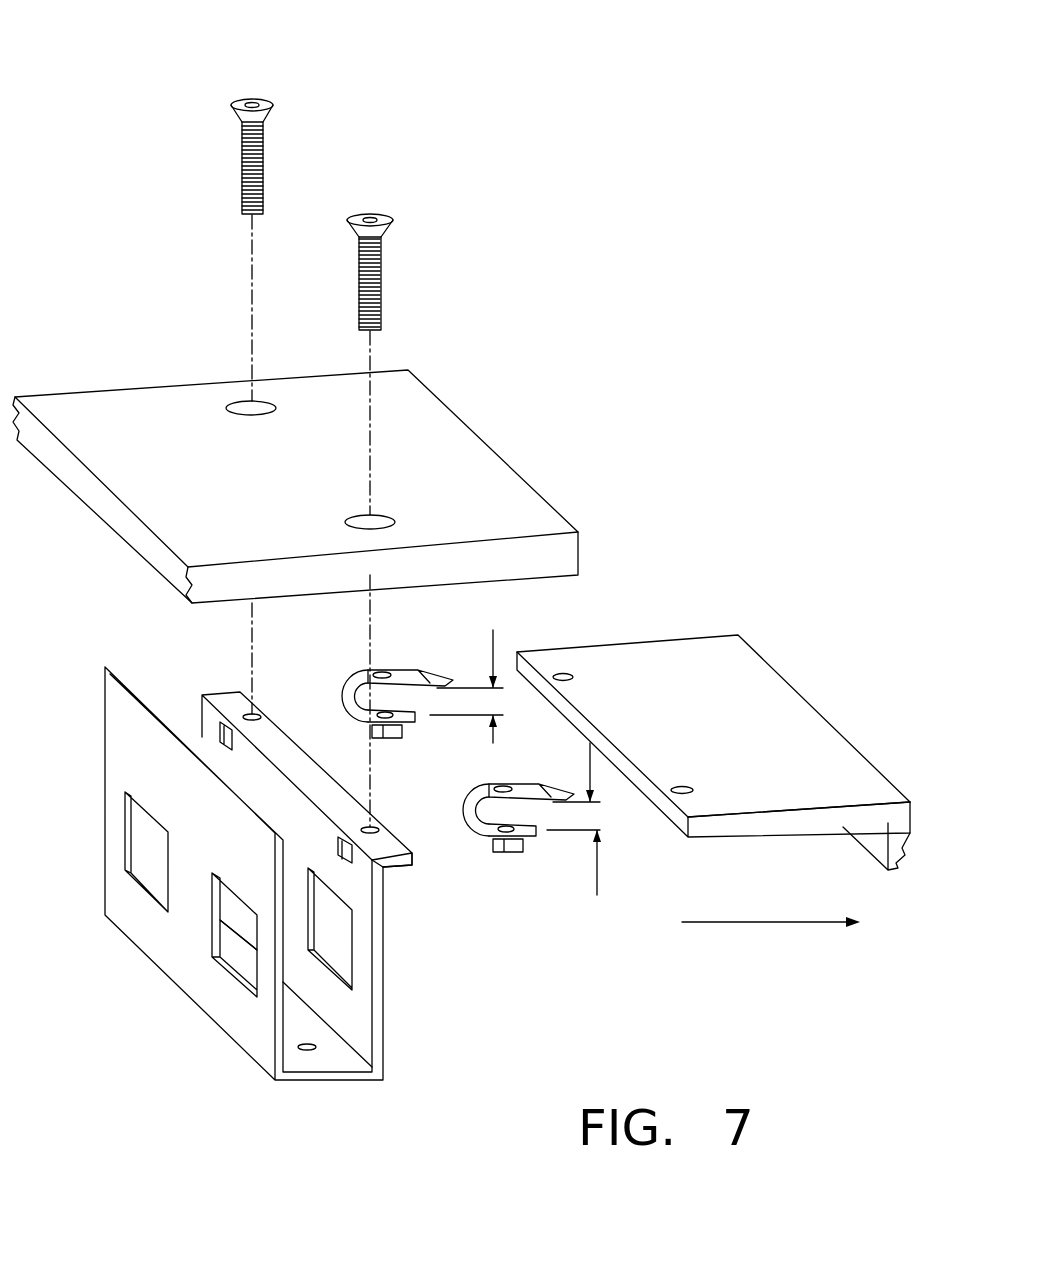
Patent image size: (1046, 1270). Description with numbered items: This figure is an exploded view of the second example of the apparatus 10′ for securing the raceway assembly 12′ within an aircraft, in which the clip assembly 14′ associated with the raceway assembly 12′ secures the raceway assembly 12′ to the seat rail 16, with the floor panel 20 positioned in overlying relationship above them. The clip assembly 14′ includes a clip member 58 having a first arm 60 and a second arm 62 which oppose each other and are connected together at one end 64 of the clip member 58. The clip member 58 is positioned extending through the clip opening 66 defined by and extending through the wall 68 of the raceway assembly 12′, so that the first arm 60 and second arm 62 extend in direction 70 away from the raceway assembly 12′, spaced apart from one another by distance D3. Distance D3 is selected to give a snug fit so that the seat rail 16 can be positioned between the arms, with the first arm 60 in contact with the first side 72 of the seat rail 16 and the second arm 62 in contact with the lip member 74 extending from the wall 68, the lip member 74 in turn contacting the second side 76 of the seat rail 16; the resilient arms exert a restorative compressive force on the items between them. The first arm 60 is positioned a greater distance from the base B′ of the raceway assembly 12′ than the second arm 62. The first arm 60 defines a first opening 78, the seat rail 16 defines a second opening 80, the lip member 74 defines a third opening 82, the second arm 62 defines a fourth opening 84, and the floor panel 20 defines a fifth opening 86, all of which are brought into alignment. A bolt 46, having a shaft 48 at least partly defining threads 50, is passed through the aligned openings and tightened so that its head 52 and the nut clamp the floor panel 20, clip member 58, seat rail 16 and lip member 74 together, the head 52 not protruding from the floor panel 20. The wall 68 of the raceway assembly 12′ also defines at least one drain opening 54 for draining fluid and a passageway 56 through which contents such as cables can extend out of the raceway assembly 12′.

The apparatus 10′ is at (553, 920).
The raceway assembly 12′ is at (158, 950).
The clip assembly 14′ is at (488, 893).
The seat rail 16 is at (750, 685).
The floor panel 20 is at (443, 440).
The bolt 46 is at (285, 87).
The shaft 48 is at (283, 137).
The threads 50 is at (242, 180).
The head 52 is at (237, 102).
The drain opening 54 is at (307, 1050).
The passageway 56 is at (130, 882).
The clip member 58 is at (345, 668).
The first arm 60 is at (438, 672).
The second arm 62 is at (413, 727).
The one end 64 is at (348, 690).
The clip opening 66 is at (220, 728).
The wall 68 is at (230, 1000).
The direction 70 is at (788, 927).
The first side 72 is at (760, 798).
The lip member 74 is at (393, 867).
The second side 76 is at (760, 837).
The first opening 78 is at (370, 673).
The second opening 80 is at (575, 675).
The third opening 82 is at (250, 715).
The fourth opening 84 is at (388, 713).
The fifth opening 86 is at (257, 402).
The distance D3 is at (493, 633).
The base B′ is at (333, 1087).